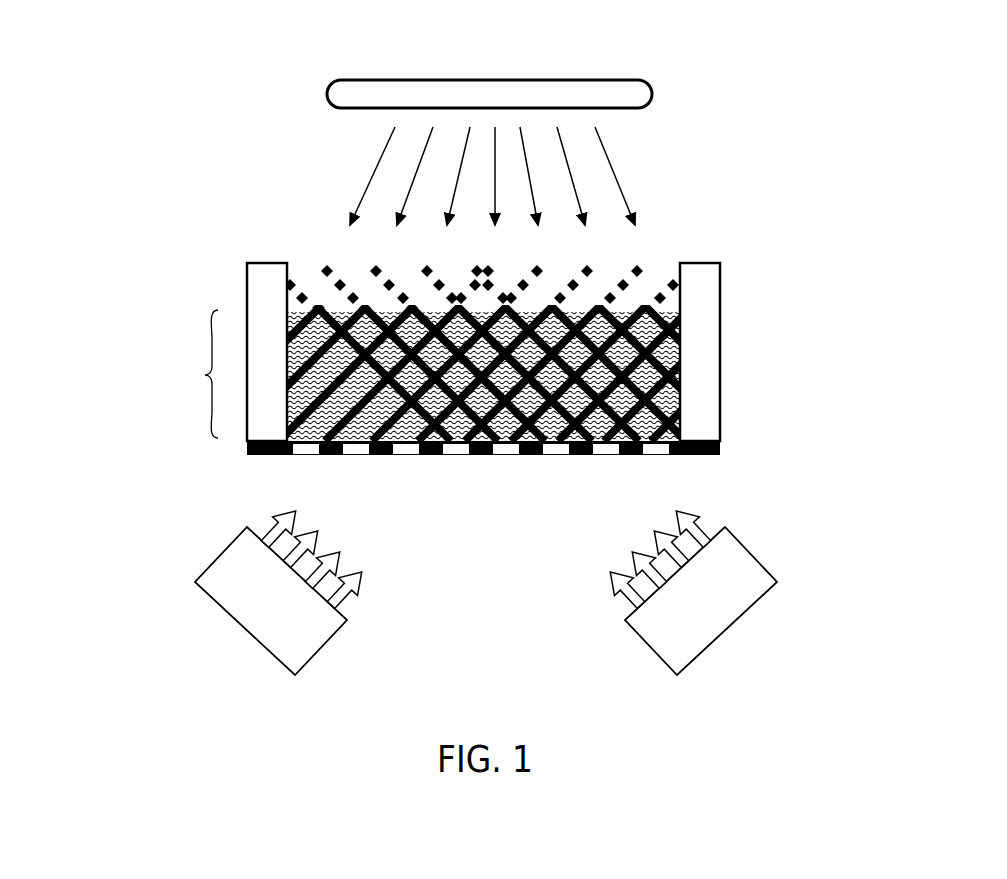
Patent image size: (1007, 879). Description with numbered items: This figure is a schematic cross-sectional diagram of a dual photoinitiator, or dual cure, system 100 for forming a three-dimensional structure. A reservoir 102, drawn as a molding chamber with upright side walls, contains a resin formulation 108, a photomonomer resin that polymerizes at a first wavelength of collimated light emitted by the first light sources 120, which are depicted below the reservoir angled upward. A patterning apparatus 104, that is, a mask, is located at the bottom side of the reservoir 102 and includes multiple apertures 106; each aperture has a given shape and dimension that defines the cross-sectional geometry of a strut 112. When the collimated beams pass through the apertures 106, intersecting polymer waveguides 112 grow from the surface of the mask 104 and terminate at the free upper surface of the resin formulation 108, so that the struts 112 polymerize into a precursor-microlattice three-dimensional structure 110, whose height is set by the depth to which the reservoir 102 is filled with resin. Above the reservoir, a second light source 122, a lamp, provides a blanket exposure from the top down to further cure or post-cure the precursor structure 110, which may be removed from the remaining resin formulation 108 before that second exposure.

The dual photoinitiator system 100 is at (882, 147).
The reservoir 102 is at (245, 282).
The patterning apparatus 104 is at (247, 447).
The apertures 106 is at (457, 455).
The resin formulation 108 is at (680, 370).
The three-dimensional structure 110 is at (184, 374).
The strut 112 is at (646, 307).
The first light sources 120 is at (225, 613).
The second light source 122 is at (327, 95).